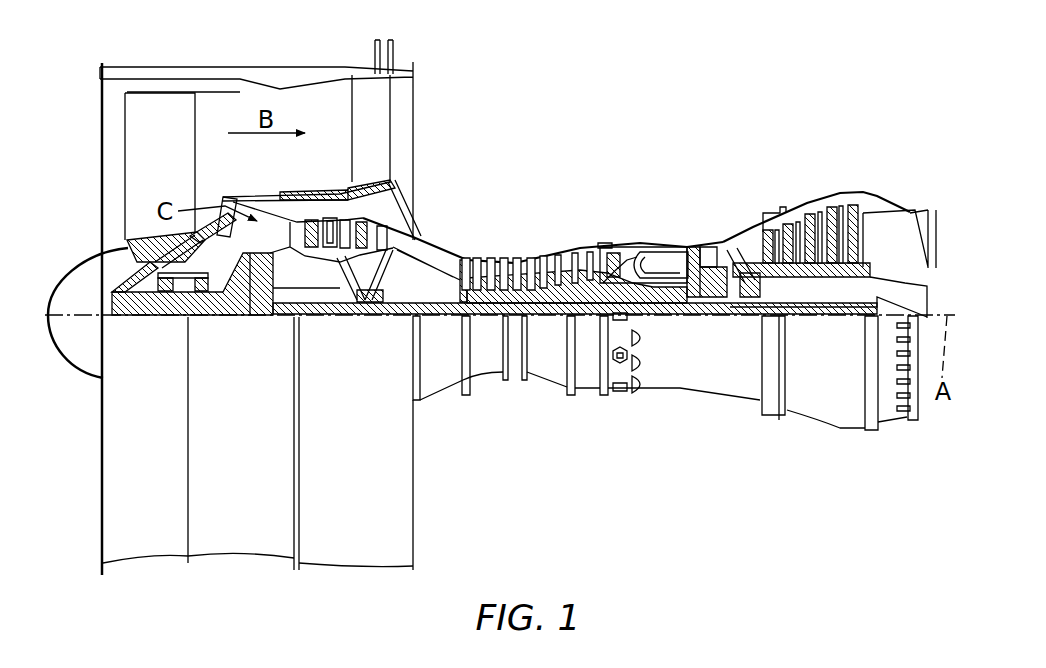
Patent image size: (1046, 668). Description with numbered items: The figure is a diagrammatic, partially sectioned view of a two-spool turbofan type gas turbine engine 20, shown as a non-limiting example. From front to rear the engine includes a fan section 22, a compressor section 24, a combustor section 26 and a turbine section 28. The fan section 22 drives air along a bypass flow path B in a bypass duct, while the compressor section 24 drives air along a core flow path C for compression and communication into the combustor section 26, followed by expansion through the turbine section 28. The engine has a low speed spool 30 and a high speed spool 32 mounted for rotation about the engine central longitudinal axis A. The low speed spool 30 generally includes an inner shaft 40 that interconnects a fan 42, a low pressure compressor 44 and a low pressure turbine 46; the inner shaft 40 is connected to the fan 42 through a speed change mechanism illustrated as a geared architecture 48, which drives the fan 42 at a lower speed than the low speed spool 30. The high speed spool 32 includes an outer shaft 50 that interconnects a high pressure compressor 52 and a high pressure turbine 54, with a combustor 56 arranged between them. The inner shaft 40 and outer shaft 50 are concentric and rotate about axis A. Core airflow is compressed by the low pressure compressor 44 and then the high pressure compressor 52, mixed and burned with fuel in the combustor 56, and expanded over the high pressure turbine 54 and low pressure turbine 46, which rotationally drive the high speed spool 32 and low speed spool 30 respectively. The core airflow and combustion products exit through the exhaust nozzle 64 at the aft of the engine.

The gas turbine engine 20 is at (742, 117).
The fan section 22 is at (93, 53).
The compressor section 24 is at (293, 163).
The combustor section 26 is at (727, 163).
The turbine section 28 is at (878, 163).
The low speed spool 30 is at (548, 324).
The high speed spool 32 is at (588, 250).
The inner shaft 40 is at (426, 320).
The fan 42 is at (143, 162).
The low pressure compressor 44 is at (372, 221).
The low pressure turbine 46 is at (820, 206).
The geared architecture 48 is at (262, 306).
The outer shaft 50 is at (660, 316).
The high pressure compressor 52 is at (523, 256).
The high pressure turbine 54 is at (708, 246).
The combustor 56 is at (655, 258).
The exhaust nozzle 64 is at (896, 425).